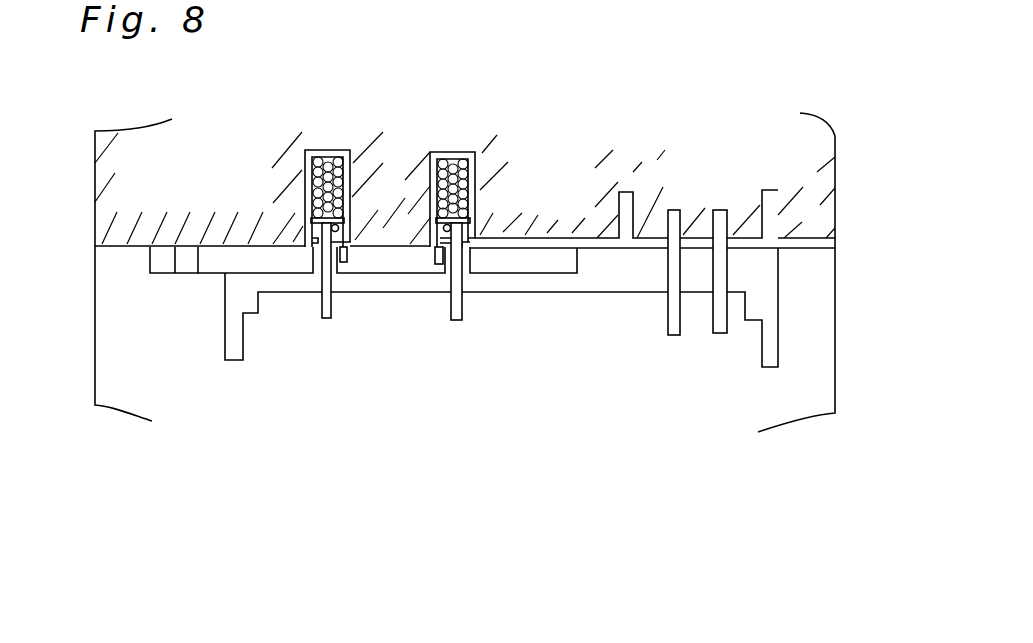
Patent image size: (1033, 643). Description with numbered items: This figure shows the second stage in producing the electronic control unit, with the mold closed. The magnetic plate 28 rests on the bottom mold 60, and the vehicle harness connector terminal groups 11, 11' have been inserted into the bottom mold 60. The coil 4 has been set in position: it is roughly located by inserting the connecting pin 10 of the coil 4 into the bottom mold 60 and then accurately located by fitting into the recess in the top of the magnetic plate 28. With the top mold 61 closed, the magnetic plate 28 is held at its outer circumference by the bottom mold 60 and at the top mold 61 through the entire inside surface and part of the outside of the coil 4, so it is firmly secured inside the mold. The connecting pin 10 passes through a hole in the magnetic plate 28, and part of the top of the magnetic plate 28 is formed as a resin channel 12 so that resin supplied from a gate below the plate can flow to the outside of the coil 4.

The coil 4 is at (468, 172).
The connecting pin 10 is at (462, 308).
The vehicle harness connector terminal group 11 is at (635, 295).
The vehicle harness connector terminal group 11' is at (718, 311).
The resin channel 12 is at (542, 244).
The magnetic plate 28 is at (153, 260).
The bottom mold 60 is at (816, 362).
The top mold 61 is at (818, 168).